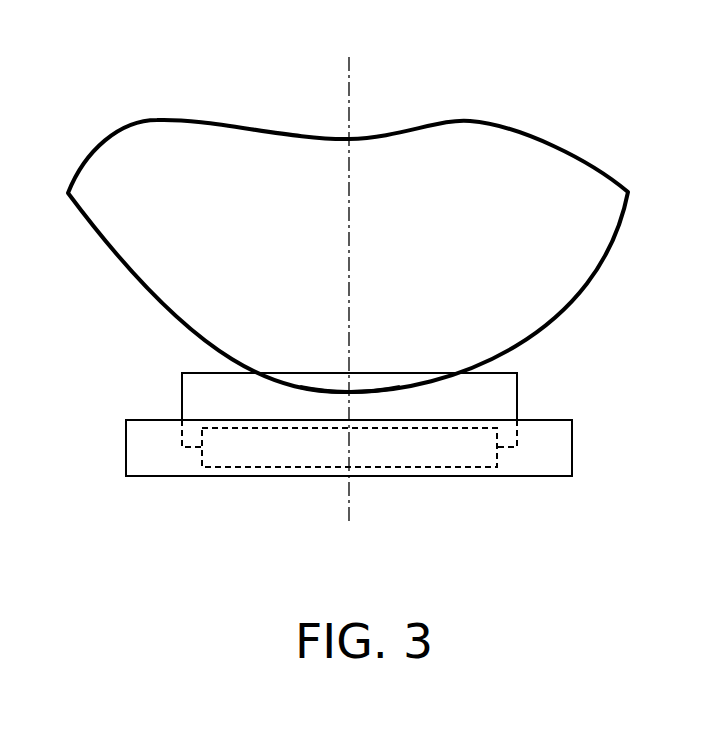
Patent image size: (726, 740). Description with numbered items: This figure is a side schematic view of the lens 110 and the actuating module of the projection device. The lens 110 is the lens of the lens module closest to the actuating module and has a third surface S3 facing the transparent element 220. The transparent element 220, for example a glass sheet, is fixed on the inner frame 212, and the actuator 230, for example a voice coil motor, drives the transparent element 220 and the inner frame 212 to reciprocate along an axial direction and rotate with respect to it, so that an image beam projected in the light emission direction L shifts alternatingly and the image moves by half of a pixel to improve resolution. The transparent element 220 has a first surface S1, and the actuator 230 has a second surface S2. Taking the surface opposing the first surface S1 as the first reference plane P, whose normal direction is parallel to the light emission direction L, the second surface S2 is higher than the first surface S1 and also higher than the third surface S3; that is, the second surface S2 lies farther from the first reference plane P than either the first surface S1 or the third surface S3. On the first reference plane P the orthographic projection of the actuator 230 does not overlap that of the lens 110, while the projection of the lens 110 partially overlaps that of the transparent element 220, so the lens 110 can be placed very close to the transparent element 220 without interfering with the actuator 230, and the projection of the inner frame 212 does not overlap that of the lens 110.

The lens 110 is at (570, 253).
The actuator 230 is at (505, 397).
The inner frame 212 is at (557, 450).
The transparent element 220 is at (247, 467).
The first surface S1 is at (228, 425).
The second surface S2 is at (190, 369).
The third surface S3 is at (350, 396).
The light emission direction L is at (349, 95).
The first reference plane P is at (710, 81).